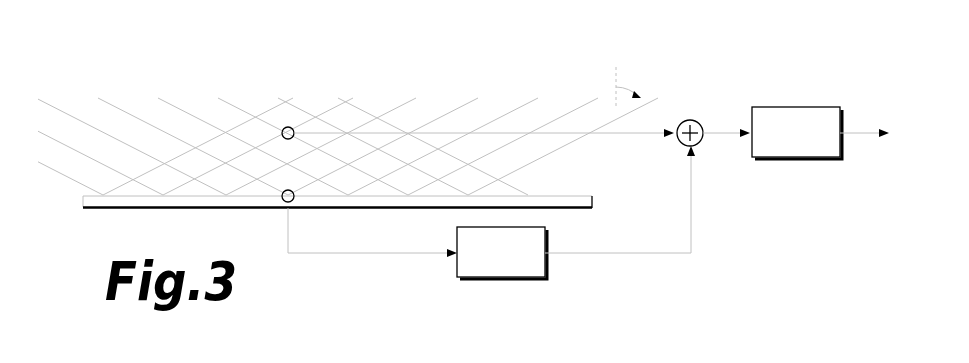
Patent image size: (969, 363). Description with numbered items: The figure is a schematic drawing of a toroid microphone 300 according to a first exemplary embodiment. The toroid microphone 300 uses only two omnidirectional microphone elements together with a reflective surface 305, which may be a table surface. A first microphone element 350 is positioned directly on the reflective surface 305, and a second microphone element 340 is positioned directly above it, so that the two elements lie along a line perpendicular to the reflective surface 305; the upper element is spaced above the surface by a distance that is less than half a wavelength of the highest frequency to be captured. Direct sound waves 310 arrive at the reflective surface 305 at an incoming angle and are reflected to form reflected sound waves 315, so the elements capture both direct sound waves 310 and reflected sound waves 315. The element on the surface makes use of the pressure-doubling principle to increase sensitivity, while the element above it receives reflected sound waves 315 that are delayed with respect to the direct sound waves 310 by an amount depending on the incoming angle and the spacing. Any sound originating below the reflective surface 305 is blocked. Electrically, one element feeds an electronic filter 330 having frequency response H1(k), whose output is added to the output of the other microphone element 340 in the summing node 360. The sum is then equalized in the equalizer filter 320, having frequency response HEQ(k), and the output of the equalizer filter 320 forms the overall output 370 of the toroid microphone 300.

The toroid microphone 300 is at (70, 30).
The reflective surface 305 is at (83, 198).
The direct sound waves 310 is at (477, 99).
The reflected sound waves 315 is at (43, 99).
The equalizer filter 320 is at (772, 156).
The electronic filter 330 is at (462, 268).
The second microphone element 340 is at (292, 128).
The first microphone element 350 is at (293, 201).
The summing node 360 is at (680, 145).
The overall output 370 is at (862, 136).